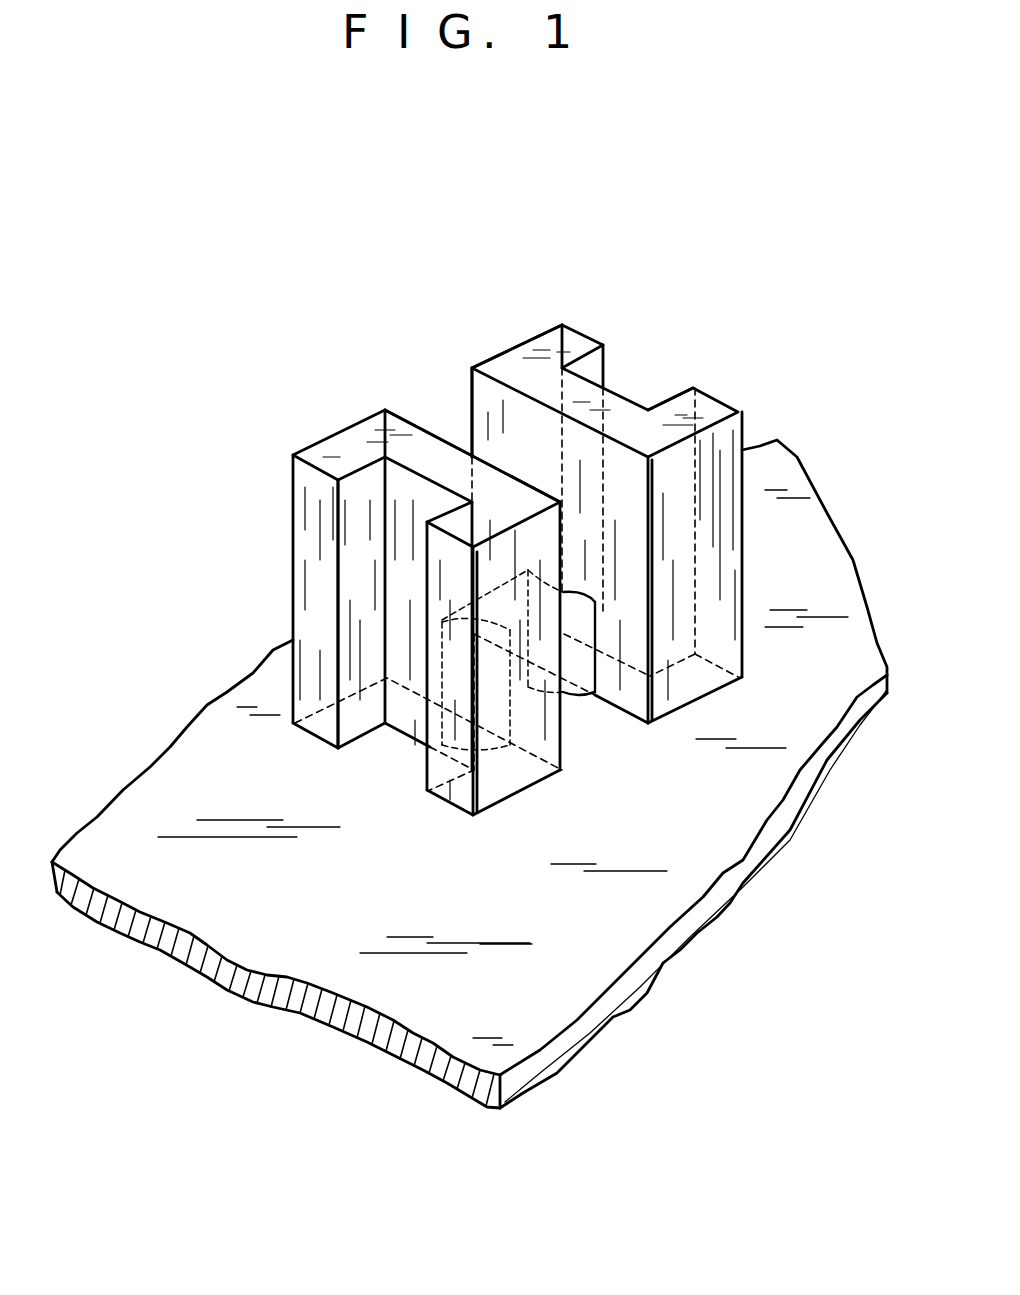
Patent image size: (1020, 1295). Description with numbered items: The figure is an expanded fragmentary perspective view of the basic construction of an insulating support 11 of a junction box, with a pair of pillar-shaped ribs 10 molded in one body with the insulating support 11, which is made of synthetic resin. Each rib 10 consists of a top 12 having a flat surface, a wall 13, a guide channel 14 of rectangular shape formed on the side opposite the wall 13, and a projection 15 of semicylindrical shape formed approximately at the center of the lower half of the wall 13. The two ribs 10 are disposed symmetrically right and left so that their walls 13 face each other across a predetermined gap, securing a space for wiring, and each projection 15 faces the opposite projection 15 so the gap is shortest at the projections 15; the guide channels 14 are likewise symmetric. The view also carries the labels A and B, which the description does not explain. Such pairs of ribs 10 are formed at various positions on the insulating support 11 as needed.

The rib 10 is at (784, 398).
The insulating support 11 is at (185, 770).
The top 12 is at (517, 365).
The wall 13 is at (472, 412).
The guide channel 14 is at (645, 377).
The projection 15 is at (470, 742).
The base region A is at (827, 841).
The direction B is at (528, 262).